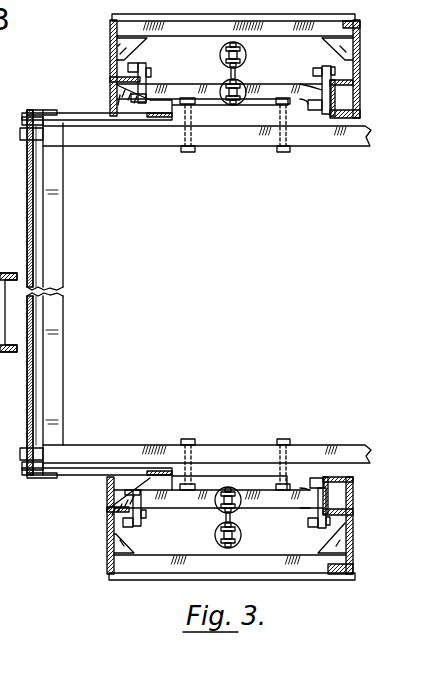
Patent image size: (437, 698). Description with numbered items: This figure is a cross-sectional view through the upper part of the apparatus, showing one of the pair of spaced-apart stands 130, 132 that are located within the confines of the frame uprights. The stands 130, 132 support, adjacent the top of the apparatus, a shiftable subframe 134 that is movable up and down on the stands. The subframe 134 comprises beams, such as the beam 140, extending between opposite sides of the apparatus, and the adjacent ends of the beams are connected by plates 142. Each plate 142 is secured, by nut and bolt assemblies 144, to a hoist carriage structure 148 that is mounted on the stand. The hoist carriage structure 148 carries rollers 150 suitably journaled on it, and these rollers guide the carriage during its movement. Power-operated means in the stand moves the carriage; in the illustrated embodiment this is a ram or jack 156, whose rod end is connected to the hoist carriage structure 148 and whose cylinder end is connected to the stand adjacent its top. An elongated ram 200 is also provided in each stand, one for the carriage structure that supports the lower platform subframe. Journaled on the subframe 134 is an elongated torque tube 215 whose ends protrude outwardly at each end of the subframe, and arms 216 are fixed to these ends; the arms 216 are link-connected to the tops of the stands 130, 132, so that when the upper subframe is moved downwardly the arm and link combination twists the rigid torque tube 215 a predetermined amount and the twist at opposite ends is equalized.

The stand 130 is at (96, 70).
The stand 132 is at (98, 525).
The shiftable subframe 134 is at (185, 298).
The beam 140 is at (64, 330).
The plate 142 is at (96, 140).
The nut and bolt assembly 144 is at (280, 149).
The hoist carriage structure 148 is at (207, 97).
The roller 150 is at (330, 66).
The ram or jack 156 is at (246, 97).
The ram 200 is at (247, 52).
The torque tube 215 is at (35, 333).
The arm 216 is at (84, 113).